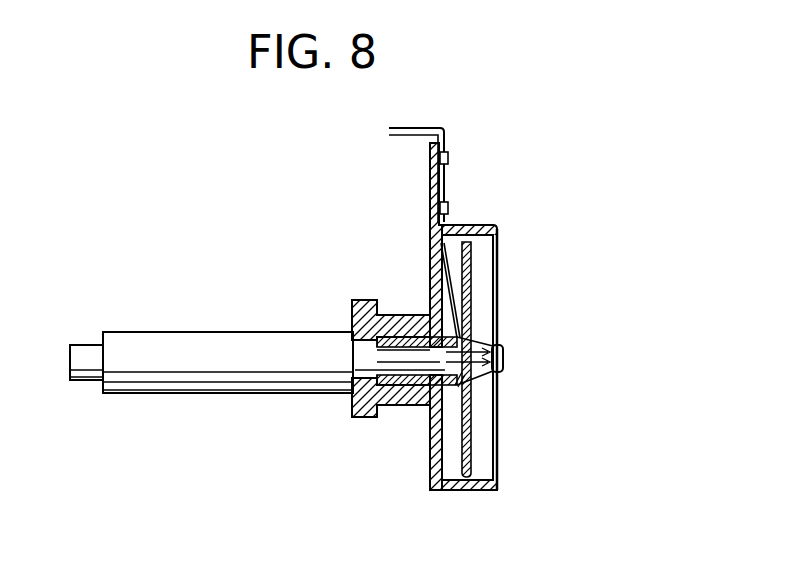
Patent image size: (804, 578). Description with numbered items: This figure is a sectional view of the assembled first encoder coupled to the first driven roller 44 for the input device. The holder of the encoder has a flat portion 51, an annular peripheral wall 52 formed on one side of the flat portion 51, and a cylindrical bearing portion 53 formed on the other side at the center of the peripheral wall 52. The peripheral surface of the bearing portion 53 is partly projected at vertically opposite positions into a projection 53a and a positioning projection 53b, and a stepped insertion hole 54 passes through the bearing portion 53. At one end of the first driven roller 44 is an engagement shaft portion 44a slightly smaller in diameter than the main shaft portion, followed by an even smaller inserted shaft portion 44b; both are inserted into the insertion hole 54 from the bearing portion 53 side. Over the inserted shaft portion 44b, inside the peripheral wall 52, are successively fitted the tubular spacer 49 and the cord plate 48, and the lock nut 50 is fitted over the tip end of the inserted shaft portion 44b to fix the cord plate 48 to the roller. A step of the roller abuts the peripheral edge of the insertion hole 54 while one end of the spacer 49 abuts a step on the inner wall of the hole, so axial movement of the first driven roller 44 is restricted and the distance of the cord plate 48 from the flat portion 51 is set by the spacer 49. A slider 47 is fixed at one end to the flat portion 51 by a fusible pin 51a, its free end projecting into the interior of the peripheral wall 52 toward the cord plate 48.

The first driven roller 44 is at (168, 332).
The engagement shaft portion 44a is at (356, 342).
The inserted shaft portion 44b is at (499, 368).
The slider 47 is at (402, 418).
The cord plate 48 is at (470, 432).
The tubular spacer 49 is at (474, 415).
The lock nut 50 is at (482, 328).
The flat portion 51 is at (427, 221).
The fusible pin 51a is at (448, 208).
The annular peripheral wall 52 is at (484, 225).
The cylindrical bearing portion 53 is at (399, 314).
The projection 53a is at (358, 300).
The positioning projection 53b is at (357, 420).
The stepped insertion hole 54 is at (357, 372).